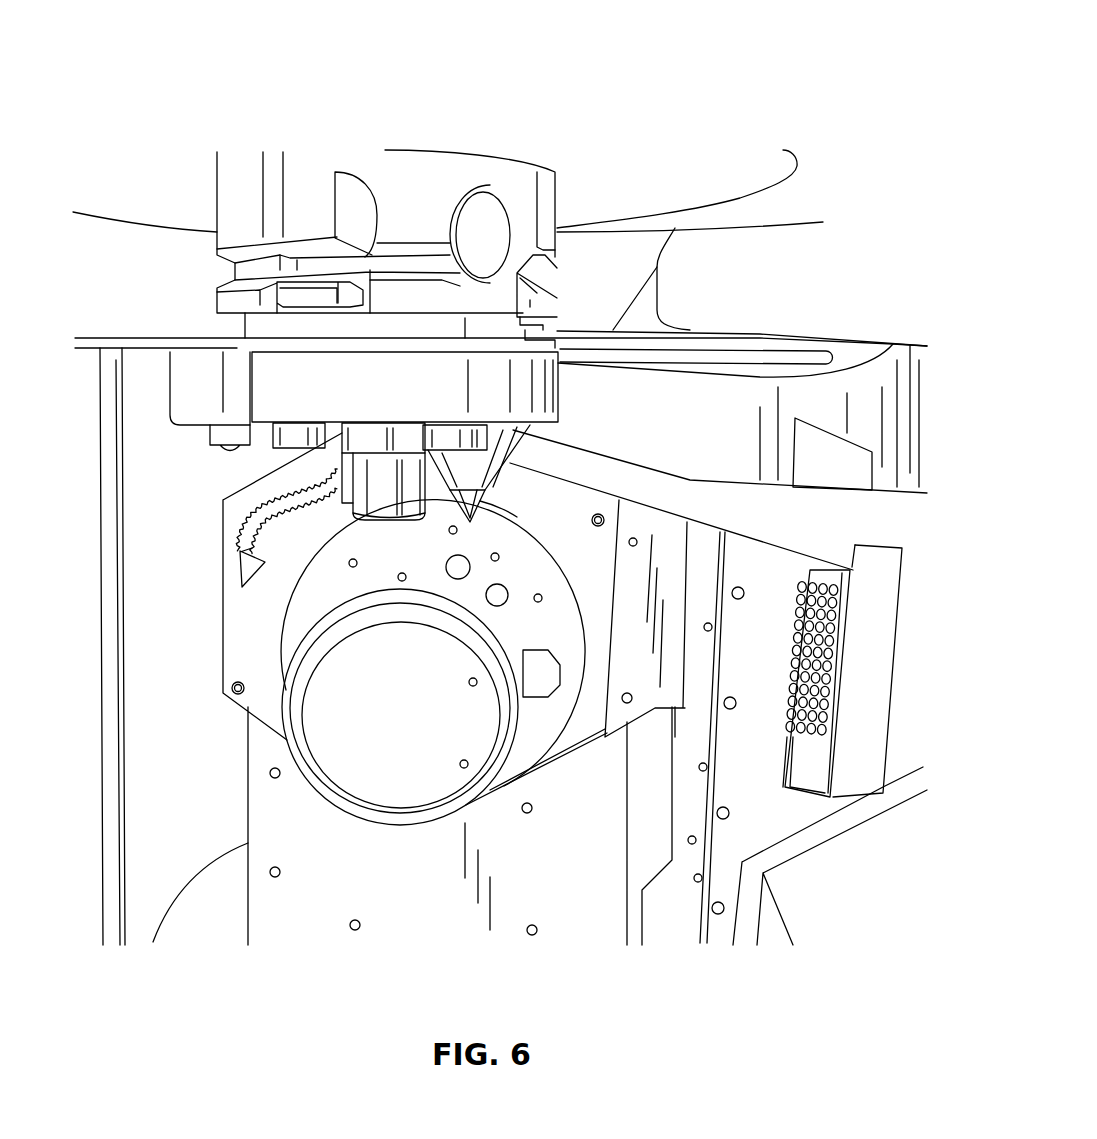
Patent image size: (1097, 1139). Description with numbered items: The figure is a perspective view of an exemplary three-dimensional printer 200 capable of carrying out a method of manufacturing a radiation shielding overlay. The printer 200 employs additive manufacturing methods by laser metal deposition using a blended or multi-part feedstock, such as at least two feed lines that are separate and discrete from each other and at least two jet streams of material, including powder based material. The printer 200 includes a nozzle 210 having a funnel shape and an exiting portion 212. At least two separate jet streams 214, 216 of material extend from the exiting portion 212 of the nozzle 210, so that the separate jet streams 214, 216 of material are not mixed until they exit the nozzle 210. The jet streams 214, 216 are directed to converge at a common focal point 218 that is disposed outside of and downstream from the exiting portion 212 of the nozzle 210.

The 3D printer 200 is at (721, 72).
The nozzle 210 is at (548, 450).
The exiting portion 212 is at (492, 497).
The jet stream 214 is at (482, 503).
The jet stream 216 is at (437, 525).
The common focal point 218 is at (528, 532).